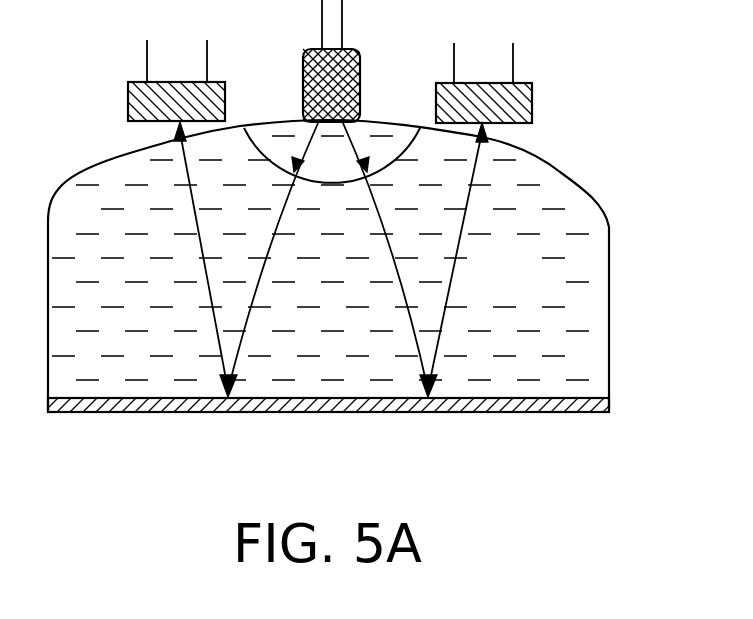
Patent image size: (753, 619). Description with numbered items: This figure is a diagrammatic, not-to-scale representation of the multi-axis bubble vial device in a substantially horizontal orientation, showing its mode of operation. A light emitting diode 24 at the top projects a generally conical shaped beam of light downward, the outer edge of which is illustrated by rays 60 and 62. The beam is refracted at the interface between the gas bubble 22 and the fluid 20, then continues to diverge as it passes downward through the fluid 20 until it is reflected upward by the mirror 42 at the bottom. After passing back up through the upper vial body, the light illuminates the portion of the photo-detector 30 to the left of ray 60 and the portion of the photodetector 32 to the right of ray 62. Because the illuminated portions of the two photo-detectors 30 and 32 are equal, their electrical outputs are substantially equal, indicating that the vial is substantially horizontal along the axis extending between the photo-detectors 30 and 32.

The fluid 20 is at (533, 279).
The gas bubble 22 is at (350, 172).
The light emitting diode 24 is at (302, 58).
The photo-detector 30 is at (532, 107).
The photodetector 32 is at (128, 102).
The mirror 42 is at (611, 403).
The ray 60 is at (370, 158).
The ray 62 is at (292, 158).